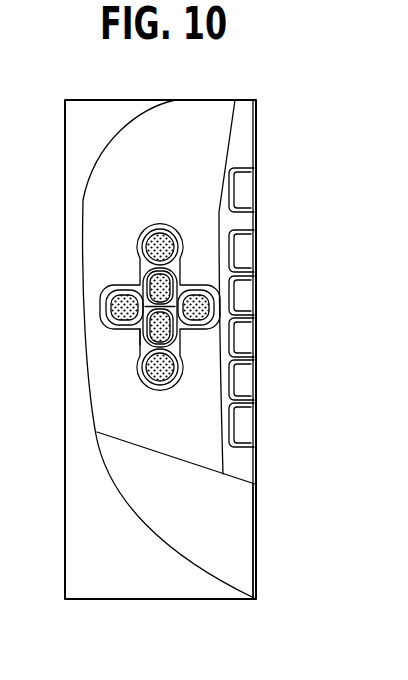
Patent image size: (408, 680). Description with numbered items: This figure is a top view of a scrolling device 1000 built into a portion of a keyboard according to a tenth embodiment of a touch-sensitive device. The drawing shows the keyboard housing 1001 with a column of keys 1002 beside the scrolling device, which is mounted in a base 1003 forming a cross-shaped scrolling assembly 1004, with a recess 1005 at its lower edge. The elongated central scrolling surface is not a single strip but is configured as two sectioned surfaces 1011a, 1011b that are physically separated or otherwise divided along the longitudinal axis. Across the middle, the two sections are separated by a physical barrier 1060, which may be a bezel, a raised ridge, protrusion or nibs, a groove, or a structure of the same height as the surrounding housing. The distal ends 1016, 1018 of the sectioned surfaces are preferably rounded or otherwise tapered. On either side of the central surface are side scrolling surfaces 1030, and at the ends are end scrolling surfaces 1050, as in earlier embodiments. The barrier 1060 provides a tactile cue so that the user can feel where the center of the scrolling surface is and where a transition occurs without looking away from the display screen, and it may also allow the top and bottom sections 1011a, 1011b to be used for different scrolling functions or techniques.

The scrolling device 1000 is at (212, 284).
The apparatus body 1001 is at (218, 113).
The operation buttons 1002 is at (247, 334).
The base member 1003 is at (139, 258).
The cross key unit 1004 is at (212, 284).
The housing recess 1005 is at (141, 339).
The sectioned surface 1011a is at (180, 272).
The sectioned surface 1011b is at (178, 325).
The distal end 1016 is at (161, 230).
The distal end 1018 is at (142, 378).
The side scrolling surface 1030 is at (122, 296).
The end scrolling surface 1050 is at (157, 230).
The barrier 1060 is at (178, 288).